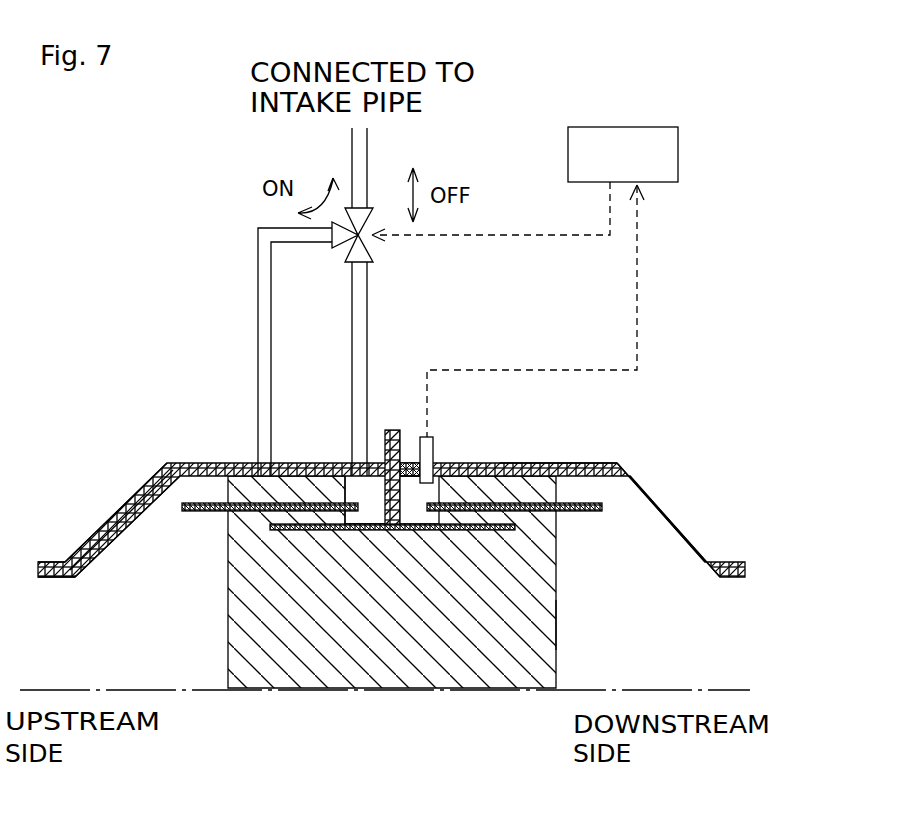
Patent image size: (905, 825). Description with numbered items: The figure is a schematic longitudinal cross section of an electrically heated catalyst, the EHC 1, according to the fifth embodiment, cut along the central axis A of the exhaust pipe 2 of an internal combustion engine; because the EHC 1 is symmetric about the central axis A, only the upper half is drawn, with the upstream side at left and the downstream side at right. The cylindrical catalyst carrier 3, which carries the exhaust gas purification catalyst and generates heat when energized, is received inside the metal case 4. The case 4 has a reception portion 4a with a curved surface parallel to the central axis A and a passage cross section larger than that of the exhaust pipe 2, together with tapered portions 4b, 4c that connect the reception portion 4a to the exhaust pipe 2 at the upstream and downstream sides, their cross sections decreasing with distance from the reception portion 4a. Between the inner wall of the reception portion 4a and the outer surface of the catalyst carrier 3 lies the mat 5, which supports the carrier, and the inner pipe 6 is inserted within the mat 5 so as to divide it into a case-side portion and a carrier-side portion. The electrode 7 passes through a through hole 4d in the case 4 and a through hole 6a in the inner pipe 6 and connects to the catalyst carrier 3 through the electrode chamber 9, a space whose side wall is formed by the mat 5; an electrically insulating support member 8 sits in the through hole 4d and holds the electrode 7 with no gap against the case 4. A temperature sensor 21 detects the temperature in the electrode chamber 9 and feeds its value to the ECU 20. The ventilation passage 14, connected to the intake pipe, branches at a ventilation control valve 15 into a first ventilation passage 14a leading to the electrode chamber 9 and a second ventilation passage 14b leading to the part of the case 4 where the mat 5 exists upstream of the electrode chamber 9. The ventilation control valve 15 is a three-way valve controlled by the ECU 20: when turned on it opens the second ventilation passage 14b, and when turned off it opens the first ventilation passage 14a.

The EHC 1 is at (676, 378).
The exhaust pipe 2 is at (47, 455).
The catalyst carrier 3 is at (228, 622).
The case 4 is at (200, 463).
The reception portion 4a is at (570, 463).
The tapered portion 4b is at (125, 505).
The tapered portion 4c is at (665, 512).
The through hole 4d is at (413, 463).
The mat 5 is at (543, 488).
The inner pipe 6 is at (220, 507).
The through hole 6a is at (480, 492).
The electrode 7 is at (392, 430).
The support member 8 is at (407, 463).
The electrode chamber 9 is at (363, 497).
The ventilation passage 14 is at (352, 162).
The first ventilation passage 14a is at (352, 323).
The second ventilation passage 14b is at (258, 323).
The ventilation control valve 15 is at (370, 222).
The ECU 20 is at (637, 127).
The temperature sensor 21 is at (433, 452).
The central axis A is at (645, 689).